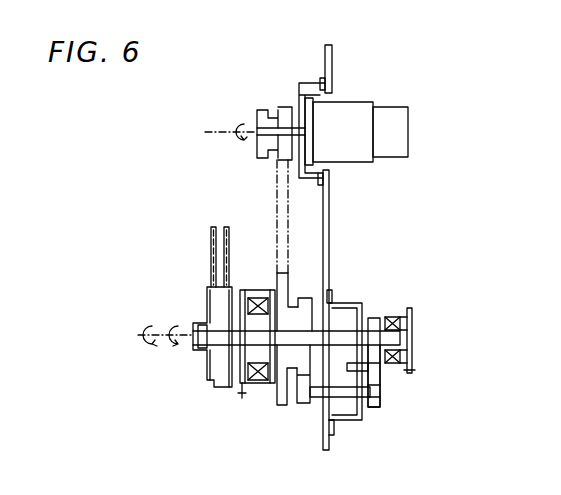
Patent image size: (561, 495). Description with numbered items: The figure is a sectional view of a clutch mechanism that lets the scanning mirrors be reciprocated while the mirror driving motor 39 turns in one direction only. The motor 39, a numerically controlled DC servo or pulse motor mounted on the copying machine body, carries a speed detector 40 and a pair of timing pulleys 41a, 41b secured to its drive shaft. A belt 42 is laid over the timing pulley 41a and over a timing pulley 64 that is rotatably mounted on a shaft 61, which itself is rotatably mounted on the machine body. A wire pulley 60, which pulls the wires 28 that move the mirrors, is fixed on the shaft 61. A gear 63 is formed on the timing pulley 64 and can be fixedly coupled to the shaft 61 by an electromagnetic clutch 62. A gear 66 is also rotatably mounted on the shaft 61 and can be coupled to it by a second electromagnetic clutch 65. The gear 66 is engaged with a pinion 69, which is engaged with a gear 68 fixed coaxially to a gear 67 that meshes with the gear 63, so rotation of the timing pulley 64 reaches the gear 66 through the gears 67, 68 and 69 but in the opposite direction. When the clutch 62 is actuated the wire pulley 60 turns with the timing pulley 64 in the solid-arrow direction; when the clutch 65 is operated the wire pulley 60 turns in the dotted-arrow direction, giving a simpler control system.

The wires 28 is at (212, 233).
The mirror driving motor 39 is at (355, 102).
The speed detector 40 is at (409, 118).
The timing pulley 41a is at (286, 107).
The timing pulley 41b is at (263, 110).
The timing belt 42 is at (277, 177).
The wire pulley 60 is at (210, 370).
The shaft 61 is at (204, 340).
The electromagnetic clutch 62 is at (257, 383).
The gear 63 is at (306, 297).
The timing pulley 64 is at (290, 268).
The electromagnetic clutch 65 is at (400, 310).
The gear 66 is at (377, 317).
The gear 67 is at (302, 403).
The gear 68 is at (373, 408).
The pinion 69 is at (398, 376).